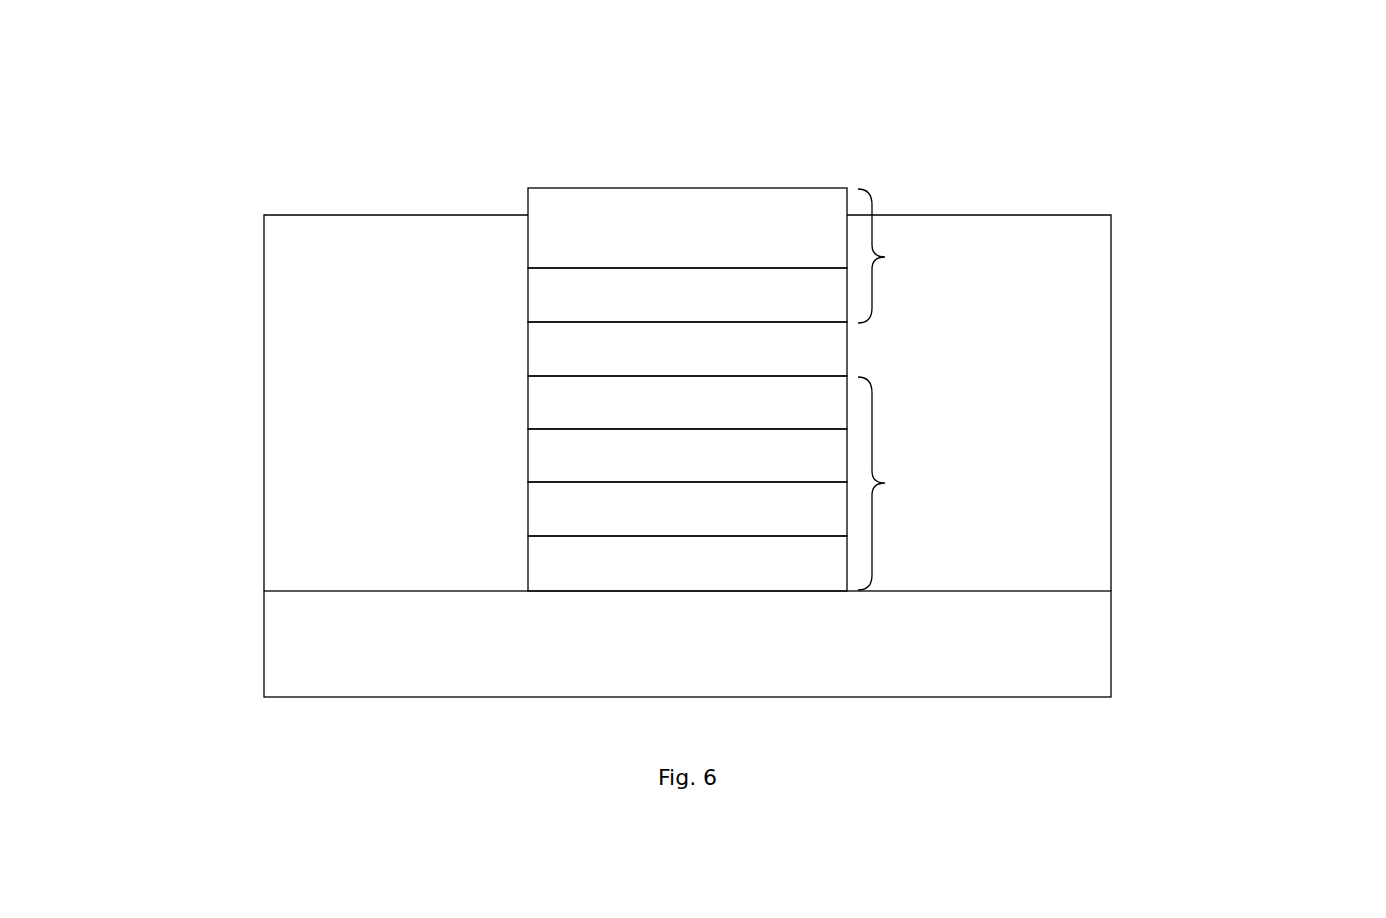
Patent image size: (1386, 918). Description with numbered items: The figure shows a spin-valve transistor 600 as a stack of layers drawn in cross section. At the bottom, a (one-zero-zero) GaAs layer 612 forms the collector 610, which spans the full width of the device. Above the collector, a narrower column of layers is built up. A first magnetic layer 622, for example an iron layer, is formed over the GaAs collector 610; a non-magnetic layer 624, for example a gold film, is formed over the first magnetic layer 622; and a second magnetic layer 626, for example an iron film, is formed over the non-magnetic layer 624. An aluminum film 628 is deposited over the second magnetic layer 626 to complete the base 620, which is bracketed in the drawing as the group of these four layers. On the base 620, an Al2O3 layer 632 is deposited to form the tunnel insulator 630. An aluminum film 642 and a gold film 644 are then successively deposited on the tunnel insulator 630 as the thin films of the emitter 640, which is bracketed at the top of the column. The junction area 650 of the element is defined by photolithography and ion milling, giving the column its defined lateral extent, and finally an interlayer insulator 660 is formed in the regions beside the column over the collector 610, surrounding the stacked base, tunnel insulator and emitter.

The spin-valve transistor 600 is at (234, 105).
The collector 610 is at (1225, 646).
The GaAs layer 612 is at (687, 644).
The base 620 is at (965, 483).
The first magnetic layer 622 is at (687, 563).
The non-magnetic layer 624 is at (687, 509).
The second magnetic layer 626 is at (687, 455).
The aluminum film 628 is at (687, 402).
The tunnel insulator 630 is at (1030, 349).
The Al2O3 layer 632 is at (687, 349).
The emitter 640 is at (527, 183).
The aluminum film 642 is at (687, 295).
The gold film 644 is at (687, 228).
The junction area 650 is at (523, 405).
The interlayer insulator 660 is at (1032, 549).